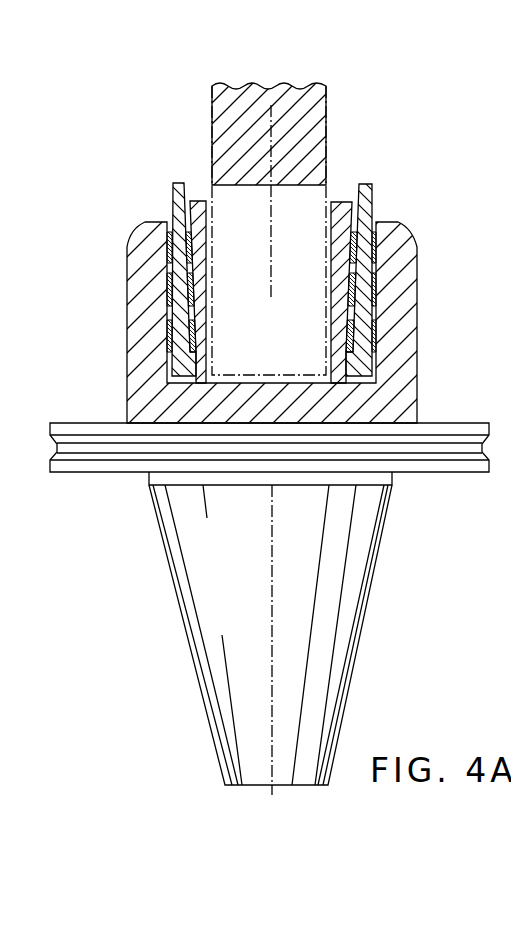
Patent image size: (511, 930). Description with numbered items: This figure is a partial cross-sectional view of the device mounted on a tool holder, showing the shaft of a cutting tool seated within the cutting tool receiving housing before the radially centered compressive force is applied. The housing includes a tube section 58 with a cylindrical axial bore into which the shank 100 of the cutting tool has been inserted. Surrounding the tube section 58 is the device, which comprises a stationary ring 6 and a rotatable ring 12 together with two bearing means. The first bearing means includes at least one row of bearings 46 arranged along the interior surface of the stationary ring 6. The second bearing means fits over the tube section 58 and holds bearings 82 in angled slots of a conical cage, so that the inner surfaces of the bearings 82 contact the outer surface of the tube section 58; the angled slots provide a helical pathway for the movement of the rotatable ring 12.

The stationary ring 6 is at (412, 311).
The shank 100 is at (330, 110).
The tube section 58 is at (343, 202).
The rotatable ring 12 is at (367, 195).
The bearings 46 is at (375, 243).
The bearing 82 is at (352, 297).